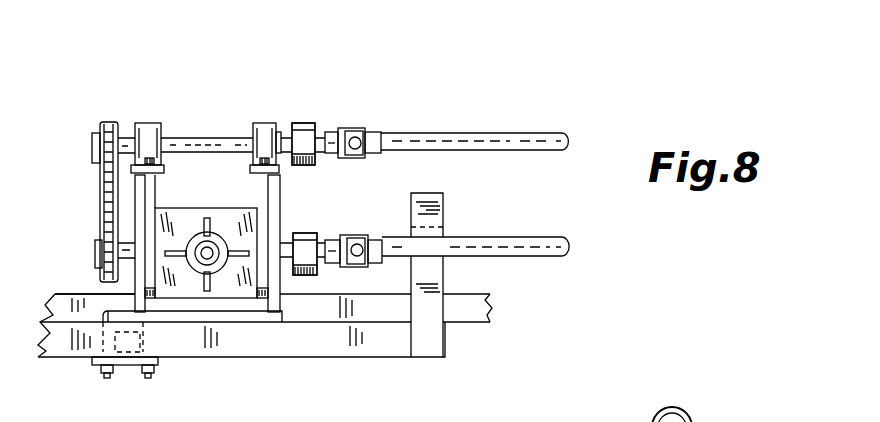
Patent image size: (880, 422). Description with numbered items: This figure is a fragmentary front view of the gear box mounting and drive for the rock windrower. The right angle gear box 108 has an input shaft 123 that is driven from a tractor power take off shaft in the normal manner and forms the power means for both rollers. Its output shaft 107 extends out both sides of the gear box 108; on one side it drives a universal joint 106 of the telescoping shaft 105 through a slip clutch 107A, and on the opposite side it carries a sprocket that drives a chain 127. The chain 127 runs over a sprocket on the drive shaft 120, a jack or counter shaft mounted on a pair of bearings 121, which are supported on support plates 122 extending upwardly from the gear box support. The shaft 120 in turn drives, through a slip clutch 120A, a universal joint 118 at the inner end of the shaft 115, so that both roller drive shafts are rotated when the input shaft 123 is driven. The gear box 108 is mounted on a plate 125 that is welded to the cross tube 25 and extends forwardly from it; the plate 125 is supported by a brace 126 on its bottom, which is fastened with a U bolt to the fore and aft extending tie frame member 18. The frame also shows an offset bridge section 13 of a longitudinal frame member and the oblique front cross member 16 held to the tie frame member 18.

The offset bridge section 13 is at (438, 193).
The front cross member 16 is at (390, 342).
The tie frame member 18 is at (123, 353).
The cross tube 25 is at (477, 302).
The telescoping shaft 105 is at (497, 242).
The universal joint 106 is at (352, 237).
The output shaft 107 is at (286, 238).
The slip clutch 107A is at (313, 235).
The gear box 108 is at (216, 213).
The shaft 115 is at (485, 132).
The universal joint 118 is at (352, 131).
The drive shaft 120 is at (287, 128).
The slip clutch 120A is at (312, 122).
The bearings 121 is at (149, 124).
The support plates 122 is at (140, 196).
The input shaft 123 is at (205, 250).
The plate 125 is at (233, 312).
The brace 126 is at (69, 294).
The chain 127 is at (100, 179).